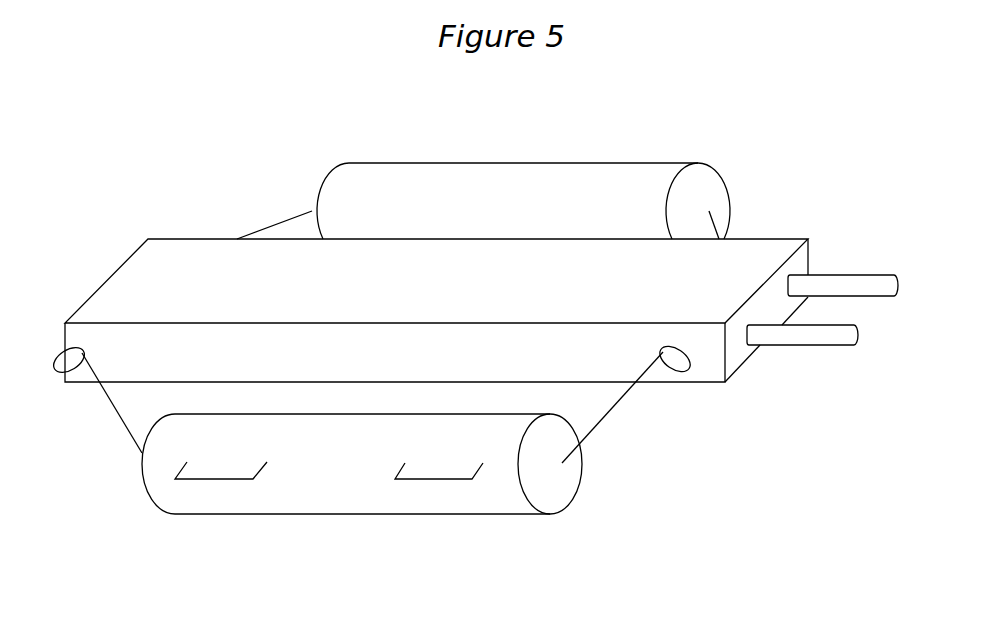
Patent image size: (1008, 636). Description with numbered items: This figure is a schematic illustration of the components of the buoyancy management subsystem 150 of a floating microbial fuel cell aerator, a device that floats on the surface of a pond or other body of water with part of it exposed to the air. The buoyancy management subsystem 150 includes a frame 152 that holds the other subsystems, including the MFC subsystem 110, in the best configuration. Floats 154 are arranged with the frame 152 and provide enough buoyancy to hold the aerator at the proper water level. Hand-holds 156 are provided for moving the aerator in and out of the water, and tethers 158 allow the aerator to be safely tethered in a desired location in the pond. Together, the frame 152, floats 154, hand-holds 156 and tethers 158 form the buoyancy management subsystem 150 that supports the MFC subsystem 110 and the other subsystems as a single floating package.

The MFC subsystem 110 is at (481, 296).
The buoyancy management subsystem 150 is at (362, 464).
The frame 152 is at (115, 441).
The floats 154 is at (523, 201).
The hand-holds 156 is at (425, 503).
The tethers 158 is at (60, 393).